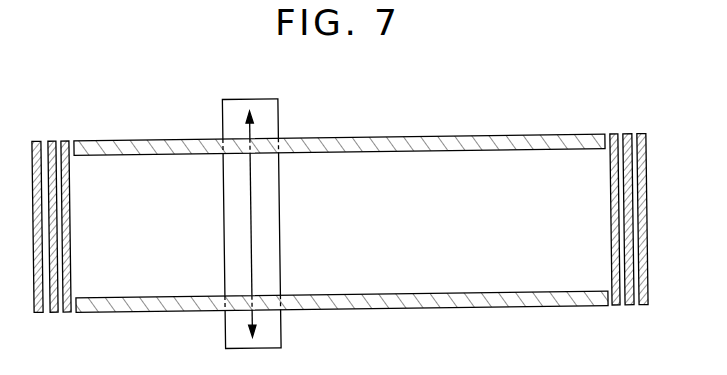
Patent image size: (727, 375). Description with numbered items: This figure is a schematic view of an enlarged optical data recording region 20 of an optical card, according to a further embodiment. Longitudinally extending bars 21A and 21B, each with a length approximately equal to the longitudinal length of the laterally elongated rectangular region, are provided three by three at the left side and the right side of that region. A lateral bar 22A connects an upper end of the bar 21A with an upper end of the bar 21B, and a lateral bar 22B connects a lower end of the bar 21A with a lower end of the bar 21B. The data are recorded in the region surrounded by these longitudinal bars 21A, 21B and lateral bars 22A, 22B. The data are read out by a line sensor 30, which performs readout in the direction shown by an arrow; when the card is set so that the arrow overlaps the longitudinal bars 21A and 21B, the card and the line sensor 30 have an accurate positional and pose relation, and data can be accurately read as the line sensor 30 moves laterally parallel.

The optical data recording region 20 is at (493, 99).
The longitudinal bars 21A is at (52, 135).
The longitudinal bars 21B is at (627, 125).
The lateral bar 22A is at (138, 136).
The lateral bar 22B is at (142, 293).
The line sensor 30 is at (280, 115).